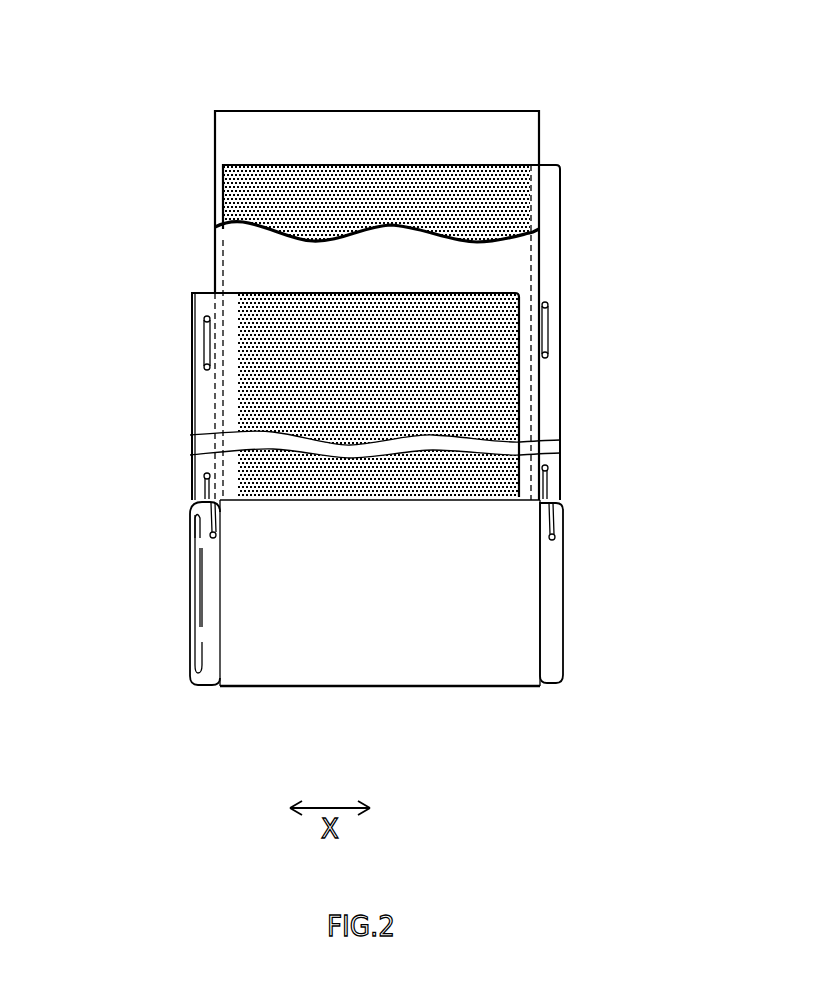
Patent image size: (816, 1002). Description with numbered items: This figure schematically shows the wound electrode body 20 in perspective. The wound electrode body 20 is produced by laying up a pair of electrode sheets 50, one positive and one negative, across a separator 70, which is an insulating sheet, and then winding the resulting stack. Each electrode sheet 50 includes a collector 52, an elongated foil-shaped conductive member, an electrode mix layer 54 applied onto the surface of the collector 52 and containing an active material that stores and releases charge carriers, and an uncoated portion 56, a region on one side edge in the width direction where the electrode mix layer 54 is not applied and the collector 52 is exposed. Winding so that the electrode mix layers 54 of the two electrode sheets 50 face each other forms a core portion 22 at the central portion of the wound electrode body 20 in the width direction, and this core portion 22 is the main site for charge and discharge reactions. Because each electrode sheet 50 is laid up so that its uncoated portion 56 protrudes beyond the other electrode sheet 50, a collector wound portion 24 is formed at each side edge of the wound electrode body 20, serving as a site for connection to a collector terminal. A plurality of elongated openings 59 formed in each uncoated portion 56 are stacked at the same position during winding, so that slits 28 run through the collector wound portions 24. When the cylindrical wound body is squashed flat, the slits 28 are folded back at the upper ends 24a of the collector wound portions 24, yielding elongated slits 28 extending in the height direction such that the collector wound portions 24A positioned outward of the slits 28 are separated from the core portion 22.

The wound electrode body 20 is at (68, 16).
The core portion 22 is at (437, 664).
The collector wound portion 24 is at (394, 578).
The collector wound portion positioned outward of the slits 24A is at (203, 525).
The upper end of the collector wound portion 24a is at (556, 498).
The slit 28 is at (207, 520).
The electrode sheet 50 is at (372, 352).
The collector 52 is at (192, 425).
The electrode mix layer 54 is at (262, 310).
The uncoated portion 56 is at (203, 394).
The elongated opening 59 is at (205, 339).
The separator 70 is at (232, 150).